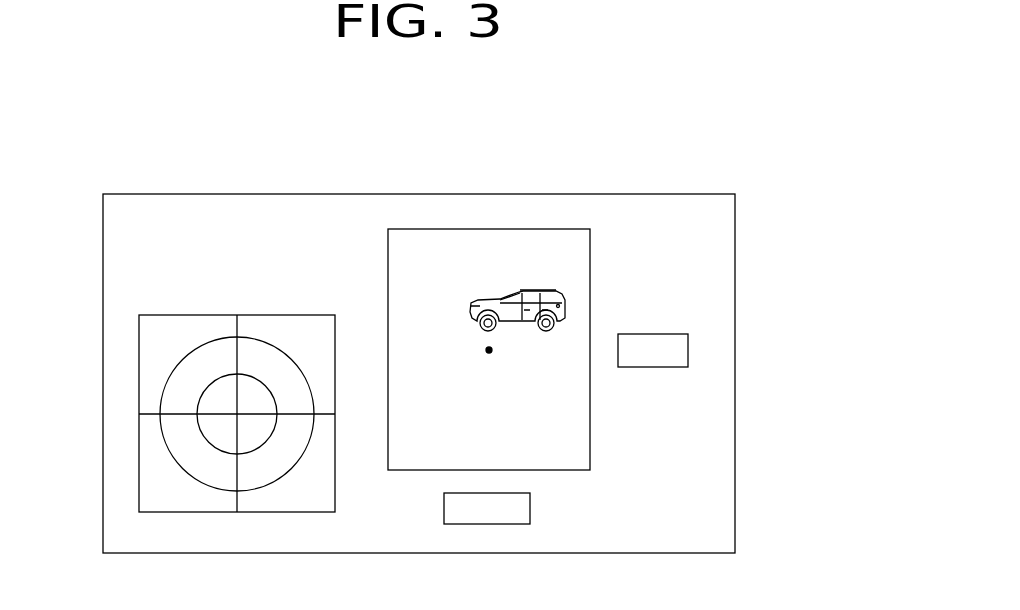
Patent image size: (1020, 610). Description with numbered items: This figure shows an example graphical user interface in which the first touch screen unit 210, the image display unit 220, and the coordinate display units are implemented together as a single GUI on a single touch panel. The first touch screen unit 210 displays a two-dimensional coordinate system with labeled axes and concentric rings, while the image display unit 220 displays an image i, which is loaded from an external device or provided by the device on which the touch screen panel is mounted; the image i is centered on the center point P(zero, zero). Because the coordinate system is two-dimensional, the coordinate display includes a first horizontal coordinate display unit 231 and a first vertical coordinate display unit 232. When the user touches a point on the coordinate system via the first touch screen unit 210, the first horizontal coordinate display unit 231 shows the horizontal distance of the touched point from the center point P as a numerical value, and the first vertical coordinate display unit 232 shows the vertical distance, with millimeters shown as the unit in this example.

The first touch screen unit 210 is at (139, 316).
The image display unit 220 is at (489, 229).
The image i is at (533, 292).
The first horizontal coordinate display unit 231 is at (517, 524).
The first vertical coordinate display unit 232 is at (688, 335).